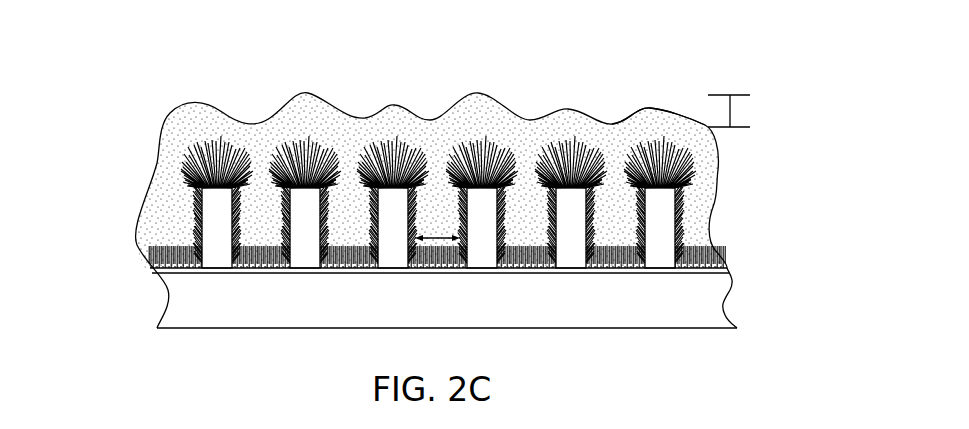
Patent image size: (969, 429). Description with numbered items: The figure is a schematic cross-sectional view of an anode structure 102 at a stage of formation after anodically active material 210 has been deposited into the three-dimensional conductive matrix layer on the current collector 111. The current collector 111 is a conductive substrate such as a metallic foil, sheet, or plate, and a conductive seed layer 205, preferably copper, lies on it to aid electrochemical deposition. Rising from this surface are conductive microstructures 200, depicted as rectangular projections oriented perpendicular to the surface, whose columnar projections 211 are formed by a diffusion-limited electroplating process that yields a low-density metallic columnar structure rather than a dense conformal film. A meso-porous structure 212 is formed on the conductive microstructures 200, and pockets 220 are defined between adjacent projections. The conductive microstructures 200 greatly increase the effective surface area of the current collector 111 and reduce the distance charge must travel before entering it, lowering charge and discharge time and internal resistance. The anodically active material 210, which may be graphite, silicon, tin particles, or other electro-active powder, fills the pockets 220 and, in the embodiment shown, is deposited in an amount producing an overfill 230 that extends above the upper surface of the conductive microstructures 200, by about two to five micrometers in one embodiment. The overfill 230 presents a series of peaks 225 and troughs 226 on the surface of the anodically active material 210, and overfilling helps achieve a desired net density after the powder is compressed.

The anode structure 102 is at (220, 80).
The current collector 111 is at (247, 303).
The conductive microstructures 200 is at (603, 65).
The conductive seed layer 205 is at (160, 268).
The anodically active material 210 is at (560, 110).
The columnar projections 211 is at (478, 243).
The meso-porous structure 212 is at (412, 135).
The pockets 220 is at (442, 267).
The peaks 225 is at (303, 92).
The troughs 226 is at (610, 127).
The overfill 230 is at (733, 113).